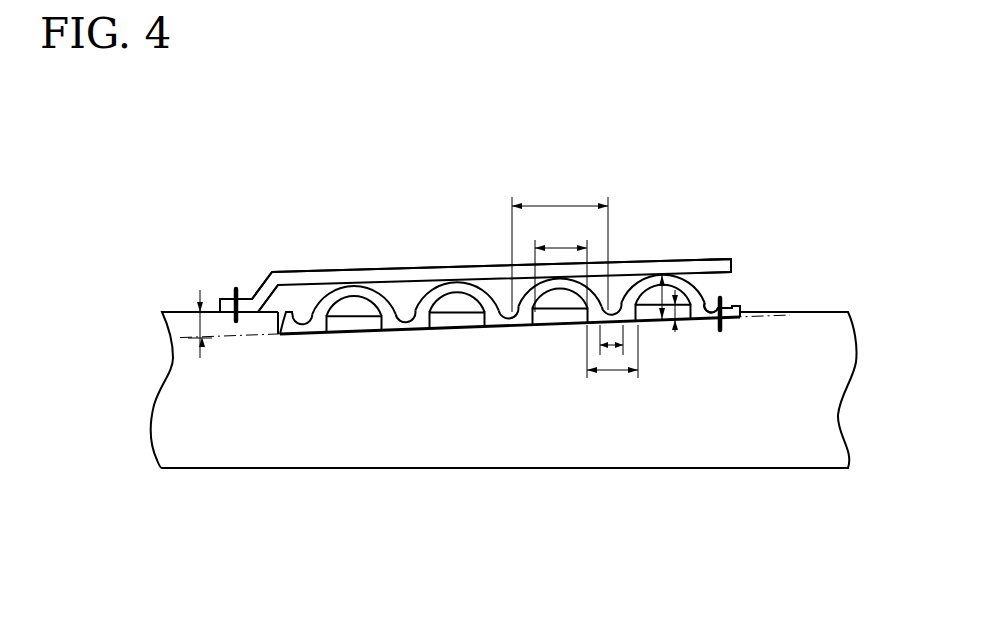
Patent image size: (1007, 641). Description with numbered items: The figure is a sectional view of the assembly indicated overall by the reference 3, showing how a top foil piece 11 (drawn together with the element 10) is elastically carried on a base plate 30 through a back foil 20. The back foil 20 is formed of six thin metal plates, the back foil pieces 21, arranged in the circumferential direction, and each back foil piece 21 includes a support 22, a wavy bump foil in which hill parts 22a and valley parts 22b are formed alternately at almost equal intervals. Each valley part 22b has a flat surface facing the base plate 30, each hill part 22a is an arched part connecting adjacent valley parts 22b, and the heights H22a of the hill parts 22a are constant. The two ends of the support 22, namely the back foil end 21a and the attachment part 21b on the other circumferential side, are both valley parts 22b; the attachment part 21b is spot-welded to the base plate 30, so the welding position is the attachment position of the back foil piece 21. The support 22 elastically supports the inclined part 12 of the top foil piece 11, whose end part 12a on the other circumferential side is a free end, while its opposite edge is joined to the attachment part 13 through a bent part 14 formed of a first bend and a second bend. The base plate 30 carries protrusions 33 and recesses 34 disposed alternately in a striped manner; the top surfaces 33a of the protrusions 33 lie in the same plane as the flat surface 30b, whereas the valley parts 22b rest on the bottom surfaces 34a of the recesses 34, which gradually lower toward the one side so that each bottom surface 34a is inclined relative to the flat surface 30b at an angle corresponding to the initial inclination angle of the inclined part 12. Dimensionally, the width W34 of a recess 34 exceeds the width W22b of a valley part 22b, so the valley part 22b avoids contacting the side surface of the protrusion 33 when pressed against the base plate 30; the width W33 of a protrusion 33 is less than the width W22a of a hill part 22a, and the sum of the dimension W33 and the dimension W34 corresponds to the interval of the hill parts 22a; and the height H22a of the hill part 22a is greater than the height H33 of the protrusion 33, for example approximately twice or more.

The connection structure 3 is at (343, 195).
The connection object 10 is at (501, 190).
The top foil piece 11 is at (498, 265).
The inclined part 12 is at (471, 214).
The end part on the other side in the circumferential direction 12a is at (733, 262).
The attachment part 13 is at (229, 293).
The bent part 14 is at (261, 290).
The back foil 20 is at (516, 434).
The back foil piece 21 is at (516, 434).
The back foil end 21a is at (283, 336).
The attachment part 21b is at (724, 303).
The support 22 is at (508, 425).
The hill part 22a is at (476, 272).
The valley part 22b is at (486, 313).
The base plate 30 is at (473, 388).
The flat surface 30b is at (185, 312).
The protrusion 33 is at (490, 437).
The top surface 33a is at (367, 332).
The recess 34 is at (493, 449).
The bottom surface 34a is at (410, 320).
The dimension of the hill part W22a is at (560, 245).
The dimension of the valley part W22b is at (613, 352).
The dimension of the protrusion W33 is at (561, 263).
The dimension of the recess W34 is at (610, 352).
The height of the hill part H22a is at (687, 300).
The height of the protrusion H33 is at (680, 318).